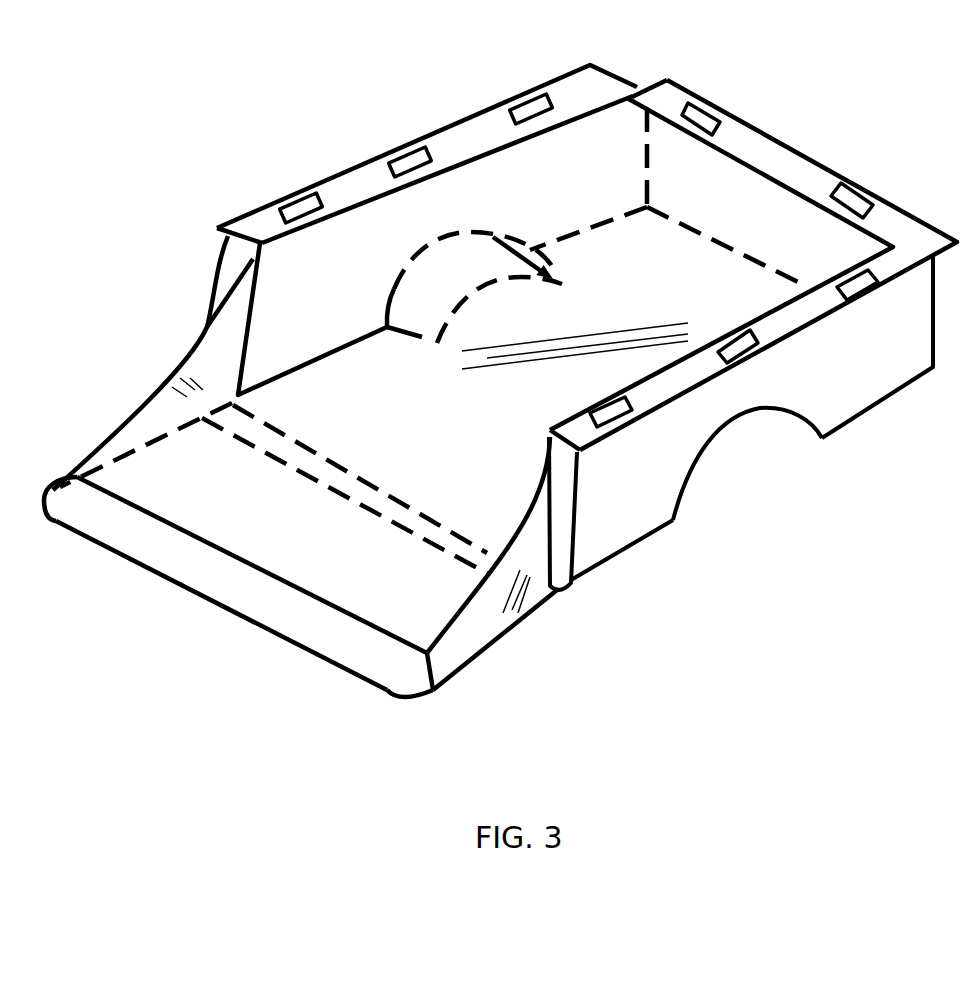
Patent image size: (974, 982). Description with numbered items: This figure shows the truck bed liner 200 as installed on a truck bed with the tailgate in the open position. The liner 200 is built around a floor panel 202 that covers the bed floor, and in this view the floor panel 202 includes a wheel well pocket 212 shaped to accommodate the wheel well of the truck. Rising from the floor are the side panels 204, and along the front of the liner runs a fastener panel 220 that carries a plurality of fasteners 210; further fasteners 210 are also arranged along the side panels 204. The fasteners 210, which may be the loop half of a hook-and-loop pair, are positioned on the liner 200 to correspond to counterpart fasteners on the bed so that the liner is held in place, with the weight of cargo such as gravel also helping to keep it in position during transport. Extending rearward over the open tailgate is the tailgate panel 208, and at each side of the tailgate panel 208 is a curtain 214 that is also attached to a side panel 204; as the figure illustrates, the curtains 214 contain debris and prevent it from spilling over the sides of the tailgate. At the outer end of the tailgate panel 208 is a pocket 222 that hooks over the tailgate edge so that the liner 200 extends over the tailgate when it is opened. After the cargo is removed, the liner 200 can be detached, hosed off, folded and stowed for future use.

The truck bed liner 200 is at (174, 299).
The floor panel 202 is at (432, 408).
The side panel 204 is at (347, 306).
The tailgate panel 208 is at (302, 549).
The fastener 210 is at (855, 196).
The wheel well pocket 212 is at (478, 258).
The curtain 214 is at (212, 363).
The fastener panel 220 is at (780, 152).
The pocket 222 is at (403, 688).